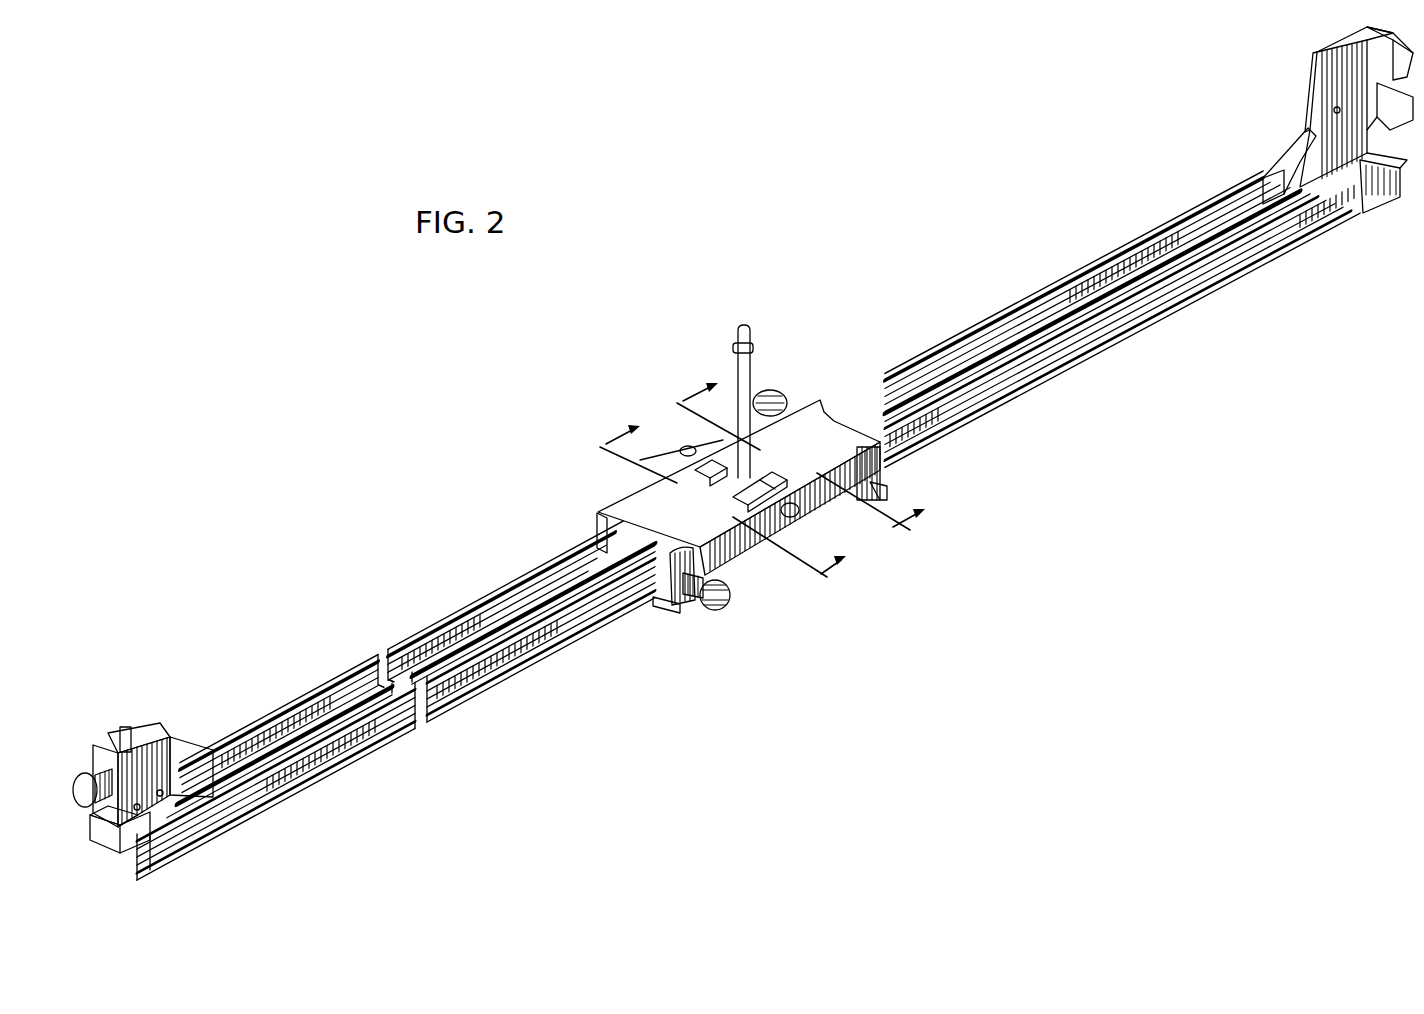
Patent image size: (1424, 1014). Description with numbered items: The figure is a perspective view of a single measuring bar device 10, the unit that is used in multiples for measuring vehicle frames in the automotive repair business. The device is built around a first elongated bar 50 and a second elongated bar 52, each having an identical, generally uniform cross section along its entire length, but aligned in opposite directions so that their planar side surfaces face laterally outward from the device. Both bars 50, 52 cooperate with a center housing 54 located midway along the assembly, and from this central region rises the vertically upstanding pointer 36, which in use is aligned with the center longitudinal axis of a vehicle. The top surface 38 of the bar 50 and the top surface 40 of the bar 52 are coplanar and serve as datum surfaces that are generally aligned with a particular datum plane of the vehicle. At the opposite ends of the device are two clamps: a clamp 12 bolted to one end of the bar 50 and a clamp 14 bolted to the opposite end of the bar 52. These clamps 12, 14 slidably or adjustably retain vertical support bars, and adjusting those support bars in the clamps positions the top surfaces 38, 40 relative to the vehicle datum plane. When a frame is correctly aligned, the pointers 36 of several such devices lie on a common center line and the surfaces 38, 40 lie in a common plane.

The measuring bar device 10 is at (833, 362).
The clamp 12 is at (163, 727).
The clamp 14 is at (1312, 77).
The pointer 36 is at (750, 372).
The top surface 38 is at (950, 345).
The top surface 40 is at (977, 405).
The first elongated bar 50 is at (1087, 352).
The second elongated bar 52 is at (1060, 275).
The center housing 54 is at (606, 506).